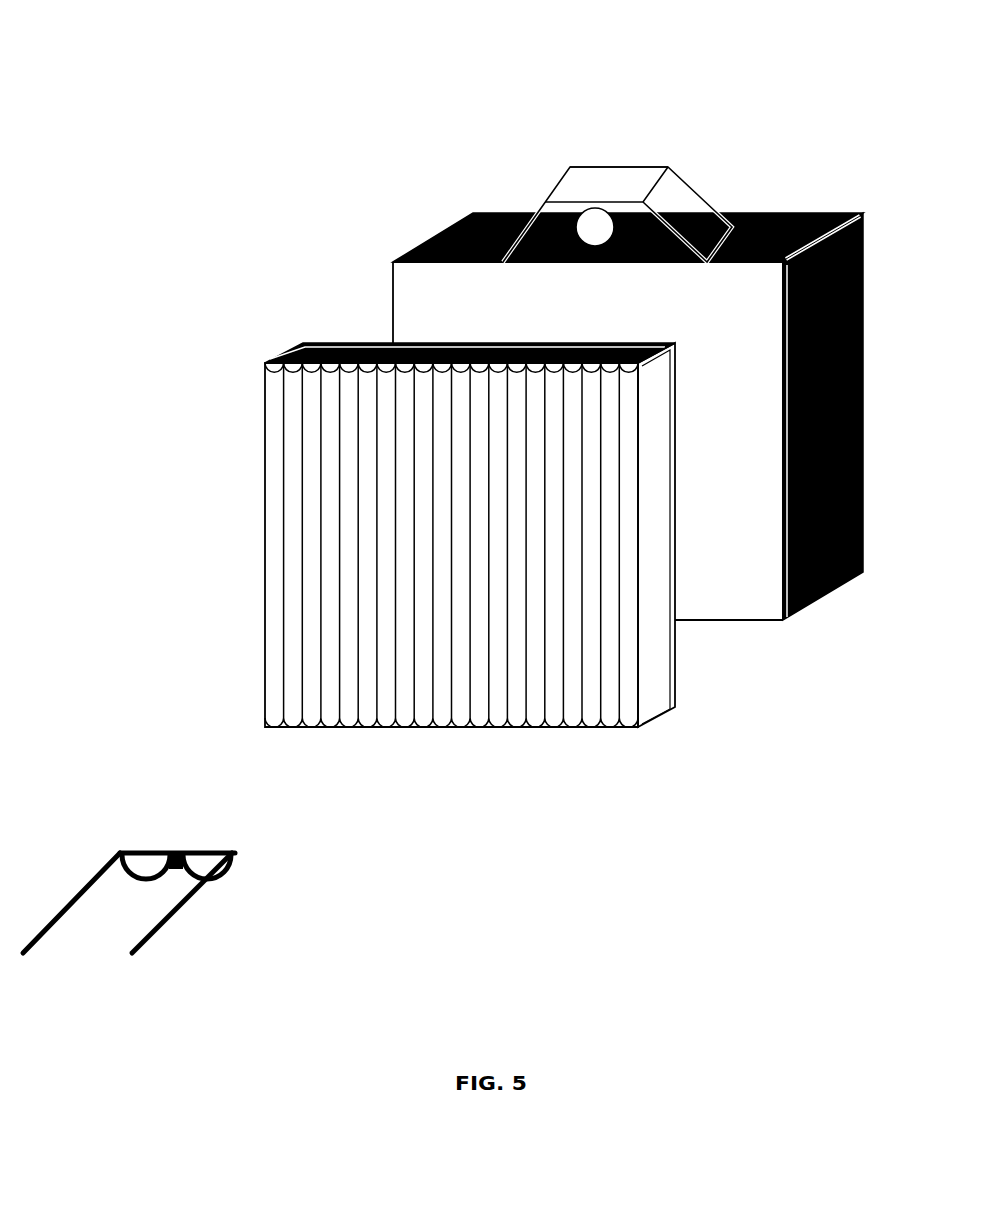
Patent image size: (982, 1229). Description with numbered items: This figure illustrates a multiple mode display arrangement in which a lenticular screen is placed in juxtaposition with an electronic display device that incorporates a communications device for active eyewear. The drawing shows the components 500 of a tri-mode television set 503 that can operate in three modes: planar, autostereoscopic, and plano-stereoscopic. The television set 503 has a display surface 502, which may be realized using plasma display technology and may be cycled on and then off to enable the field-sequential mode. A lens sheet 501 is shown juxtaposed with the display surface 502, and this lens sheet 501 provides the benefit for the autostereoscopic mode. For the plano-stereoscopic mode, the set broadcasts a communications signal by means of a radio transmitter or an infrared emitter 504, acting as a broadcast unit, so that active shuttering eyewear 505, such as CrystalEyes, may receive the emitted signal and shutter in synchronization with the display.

The components 500 is at (722, 128).
The lens sheet 501 is at (337, 322).
The display surface 502 is at (712, 547).
The television set 503 is at (510, 197).
The infrared emitter 504 is at (624, 155).
The active shuttering eyewear 505 is at (188, 928).